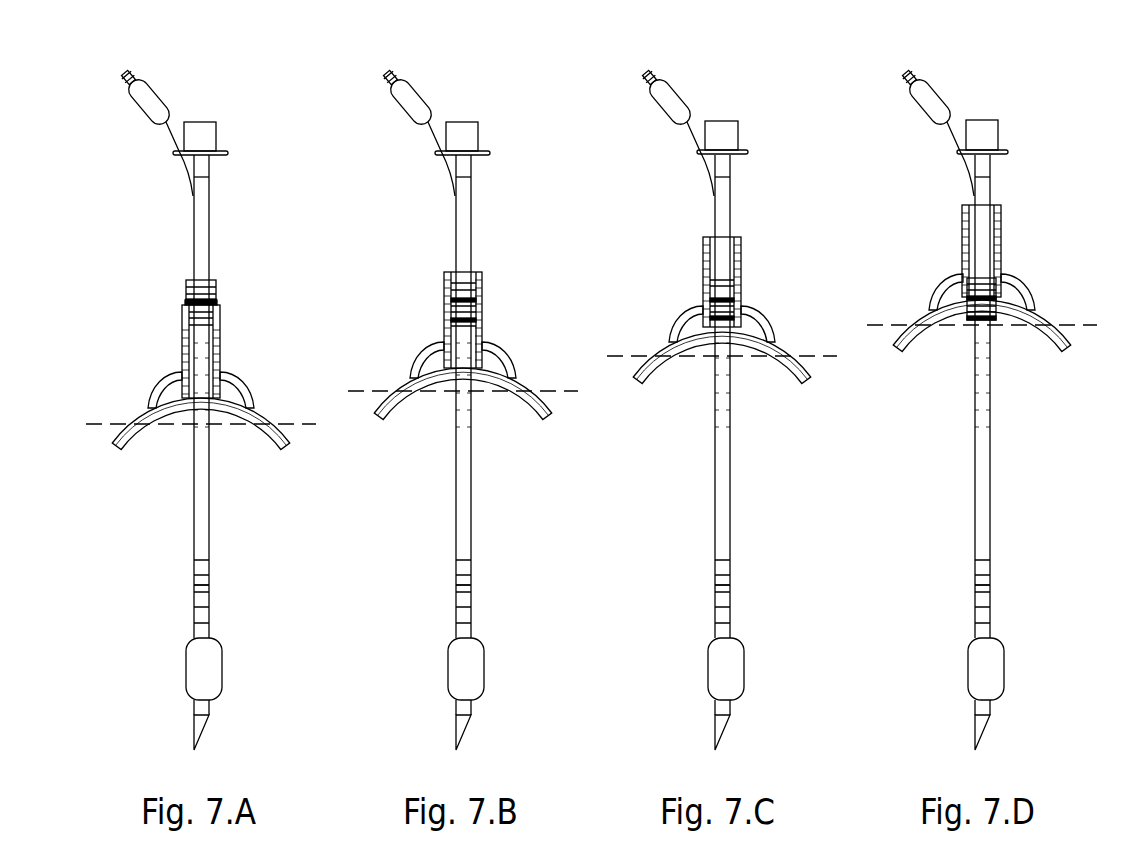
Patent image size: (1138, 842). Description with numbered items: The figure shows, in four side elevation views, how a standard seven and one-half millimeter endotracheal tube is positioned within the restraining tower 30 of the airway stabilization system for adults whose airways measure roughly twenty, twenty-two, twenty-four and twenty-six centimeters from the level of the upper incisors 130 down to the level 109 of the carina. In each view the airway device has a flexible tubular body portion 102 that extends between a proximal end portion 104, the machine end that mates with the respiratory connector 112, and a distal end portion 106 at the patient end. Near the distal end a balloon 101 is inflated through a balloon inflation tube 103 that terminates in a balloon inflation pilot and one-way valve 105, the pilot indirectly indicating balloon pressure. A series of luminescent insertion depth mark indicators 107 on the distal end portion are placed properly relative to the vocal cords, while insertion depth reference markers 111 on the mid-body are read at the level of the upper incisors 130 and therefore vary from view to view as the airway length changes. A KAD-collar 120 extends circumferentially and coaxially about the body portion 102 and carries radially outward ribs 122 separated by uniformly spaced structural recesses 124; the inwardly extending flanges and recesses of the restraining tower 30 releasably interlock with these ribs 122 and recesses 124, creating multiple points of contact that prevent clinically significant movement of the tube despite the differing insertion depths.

In FIG. 7.A, the restraining tower 30 is at (201, 383).
In FIG. 7.B, the restraining tower 30 is at (463, 350).
In FIG. 7.C, the restraining tower 30 is at (722, 287).
In FIG. 7.D, the restraining tower 30 is at (982, 263).
In FIG. 7.A, the balloon 101 is at (208, 673).
In FIG. 7.B, the balloon 101 is at (512, 669).
In FIG. 7.C, the balloon 101 is at (779, 669).
In FIG. 7.D, the balloon 101 is at (1032, 668).
In FIG. 7.A, the body portion 102 is at (210, 473).
In FIG. 7.B, the body portion 102 is at (521, 435).
In FIG. 7.C, the body portion 102 is at (781, 435).
In FIG. 7.D, the body portion 102 is at (1037, 435).
In FIG. 7.A, the balloon inflation tube 103 is at (175, 145).
In FIG. 7.B, the balloon inflation tube 103 is at (390, 159).
In FIG. 7.C, the balloon inflation tube 103 is at (651, 159).
In FIG. 7.D, the balloon inflation tube 103 is at (911, 159).
In FIG. 7.A, the proximal end portion 104 is at (205, 190).
In FIG. 7.B, the proximal end portion 104 is at (510, 222).
In FIG. 7.C, the proximal end portion 104 is at (769, 222).
In FIG. 7.D, the proximal end portion 104 is at (1032, 223).
In FIG. 7.A, the balloon inflation pilot and one-way valve 105 is at (141, 103).
In FIG. 7.B, the balloon inflation pilot and one-way valve 105 is at (380, 97).
In FIG. 7.C, the balloon inflation pilot and one-way valve 105 is at (636, 97).
In FIG. 7.D, the balloon inflation pilot and one-way valve 105 is at (897, 97).
In FIG. 7.A, the distal end portion 106 is at (206, 730).
In FIG. 7.B, the distal end portion 106 is at (506, 726).
In FIG. 7.C, the distal end portion 106 is at (764, 726).
In FIG. 7.D, the distal end portion 106 is at (1023, 727).
In FIG. 7.A, the insertion depth mark indicators 107 is at (236, 560).
In FIG. 7.B, the insertion depth mark indicators 107 is at (509, 591).
In FIG. 7.C, the insertion depth mark indicators 107 is at (768, 591).
In FIG. 7.D, the insertion depth mark indicators 107 is at (1027, 591).
In FIG. 7.A, the level of the patient's carina 109 is at (182, 587).
In FIG. 7.B, the level of the patient's carina 109 is at (419, 555).
In FIG. 7.C, the level of the patient's carina 109 is at (677, 555).
In FIG. 7.D, the level of the patient's carina 109 is at (946, 554).
In FIG. 7.A, the insertion depth reference markers 111 is at (182, 378).
In FIG. 7.B, the insertion depth reference markers 111 is at (457, 402).
In FIG. 7.C, the insertion depth reference markers 111 is at (715, 380).
In FIG. 7.D, the insertion depth reference markers 111 is at (976, 367).
In FIG. 7.A, the respiratory connector 112 is at (200, 133).
In FIG. 7.B, the respiratory connector 112 is at (497, 125).
In FIG. 7.C, the respiratory connector 112 is at (758, 128).
In FIG. 7.D, the respiratory connector 112 is at (1018, 129).
In FIG. 7.A, the KAD-collar 120 is at (184, 301).
In FIG. 7.B, the KAD-collar 120 is at (447, 298).
In FIG. 7.C, the KAD-collar 120 is at (705, 300).
In FIG. 7.D, the KAD-collar 120 is at (966, 297).
In FIG. 7.A, the ribs 122 is at (205, 283).
In FIG. 7.B, the ribs 122 is at (468, 285).
In FIG. 7.C, the ribs 122 is at (735, 282).
In FIG. 7.D, the ribs 122 is at (983, 281).
In FIG. 7.A, the structural recesses 124 is at (215, 312).
In FIG. 7.B, the structural recesses 124 is at (482, 305).
In FIG. 7.C, the structural recesses 124 is at (742, 312).
In FIG. 7.D, the structural recesses 124 is at (1000, 308).
In FIG. 7.A, the upper incisors 130 is at (97, 427).
In FIG. 7.B, the upper incisors 130 is at (352, 388).
In FIG. 7.C, the upper incisors 130 is at (650, 355).
In FIG. 7.D, the upper incisors 130 is at (869, 327).